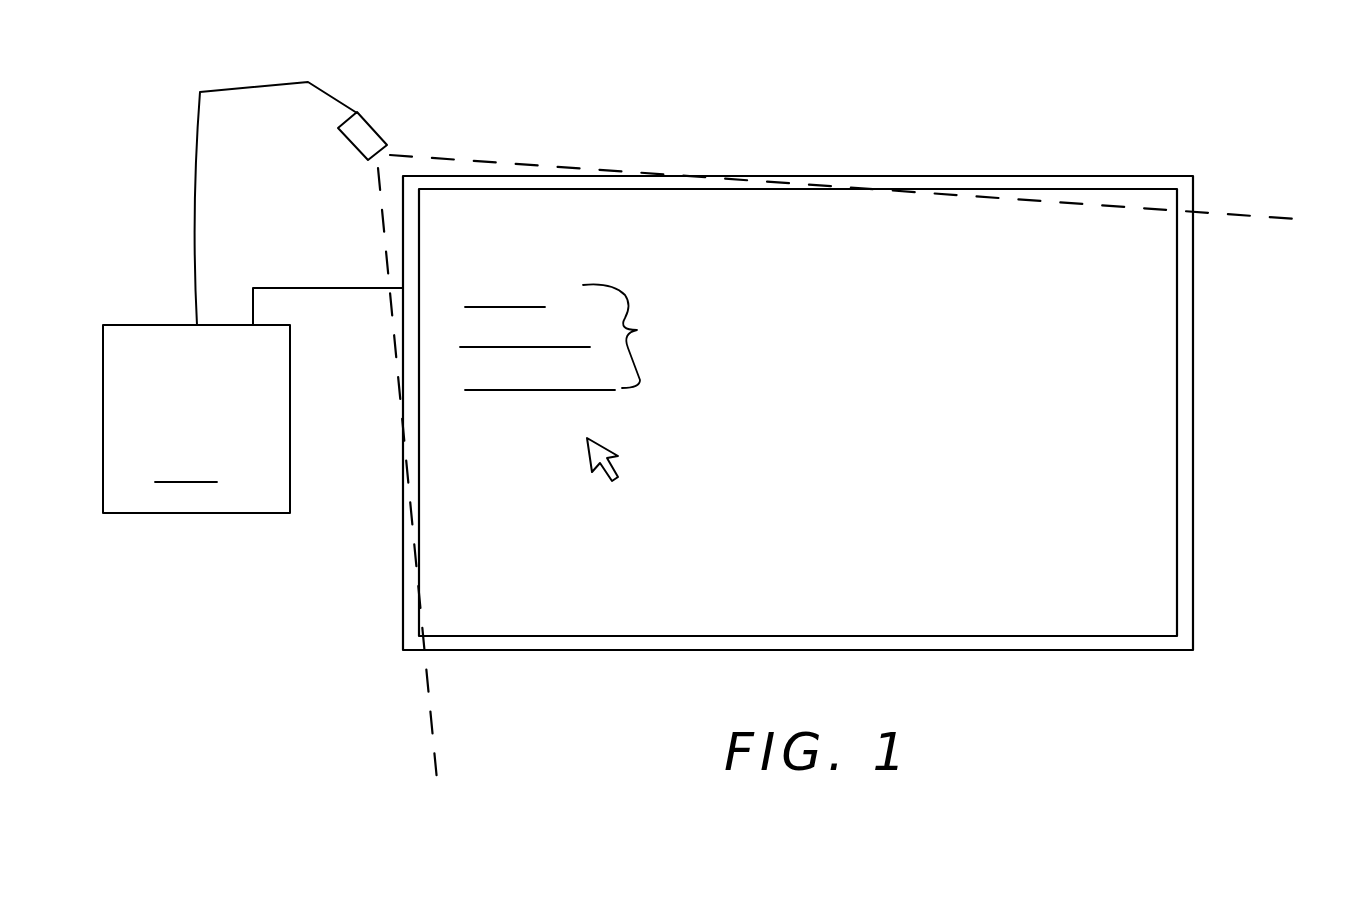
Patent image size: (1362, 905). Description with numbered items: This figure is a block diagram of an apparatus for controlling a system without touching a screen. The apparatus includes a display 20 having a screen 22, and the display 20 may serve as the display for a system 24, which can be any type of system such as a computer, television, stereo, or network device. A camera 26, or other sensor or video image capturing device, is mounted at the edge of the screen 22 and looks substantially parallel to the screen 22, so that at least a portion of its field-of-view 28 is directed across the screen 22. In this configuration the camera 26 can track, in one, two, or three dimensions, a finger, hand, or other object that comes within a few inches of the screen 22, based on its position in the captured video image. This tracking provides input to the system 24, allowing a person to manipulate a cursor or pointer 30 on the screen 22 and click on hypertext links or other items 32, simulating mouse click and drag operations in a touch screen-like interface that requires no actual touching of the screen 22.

The display 20 is at (1056, 172).
The screen 22 is at (1110, 397).
The system 24 is at (253, 297).
The camera 26 is at (367, 133).
The field-of-view 28 is at (1248, 213).
The cursor or pointer 30 is at (607, 453).
The hypertext links or other items 32 is at (637, 330).